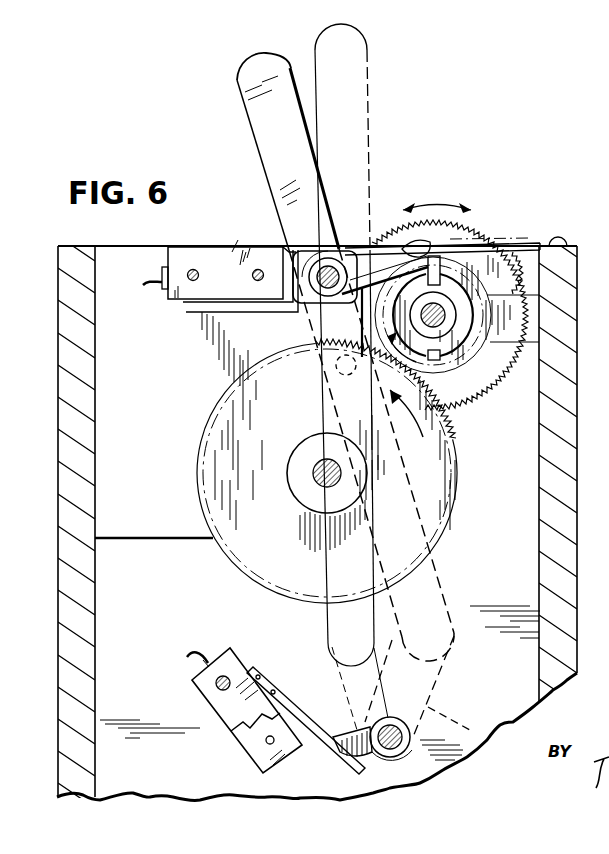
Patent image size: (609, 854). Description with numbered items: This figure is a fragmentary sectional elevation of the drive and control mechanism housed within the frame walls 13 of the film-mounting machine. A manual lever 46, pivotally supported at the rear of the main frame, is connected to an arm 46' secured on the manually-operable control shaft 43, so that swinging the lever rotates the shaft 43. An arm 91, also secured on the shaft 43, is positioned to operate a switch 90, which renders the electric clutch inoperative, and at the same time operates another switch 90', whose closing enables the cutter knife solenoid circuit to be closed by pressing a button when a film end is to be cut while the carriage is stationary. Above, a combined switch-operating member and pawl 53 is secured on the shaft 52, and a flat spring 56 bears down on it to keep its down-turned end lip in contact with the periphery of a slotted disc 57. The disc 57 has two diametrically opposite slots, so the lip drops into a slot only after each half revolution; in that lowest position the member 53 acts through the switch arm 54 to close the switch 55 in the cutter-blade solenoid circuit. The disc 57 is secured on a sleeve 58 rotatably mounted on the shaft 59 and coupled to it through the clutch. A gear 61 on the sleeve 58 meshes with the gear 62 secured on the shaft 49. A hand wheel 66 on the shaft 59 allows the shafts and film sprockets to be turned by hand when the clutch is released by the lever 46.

The housing wall 13 is at (70, 602).
The manually-operable control shaft 43 is at (399, 640).
The manual lever 46 is at (345, 380).
The arm 46' is at (476, 733).
The shaft 49 is at (313, 477).
The shaft 52 is at (333, 266).
The combined switch-operating member and pawl 53 is at (353, 301).
The switch arm 54 is at (283, 247).
The switch 55 is at (220, 313).
The flat spring 56 is at (535, 243).
The slotted disc 57 is at (468, 322).
The sleeve 58 is at (452, 306).
The shaft 59 is at (455, 328).
The gear 61 is at (440, 372).
The gear 62 is at (327, 471).
The hand wheel 66 is at (512, 297).
The switch 90 is at (244, 710).
The switch 90' is at (243, 756).
The arm 91 is at (337, 653).